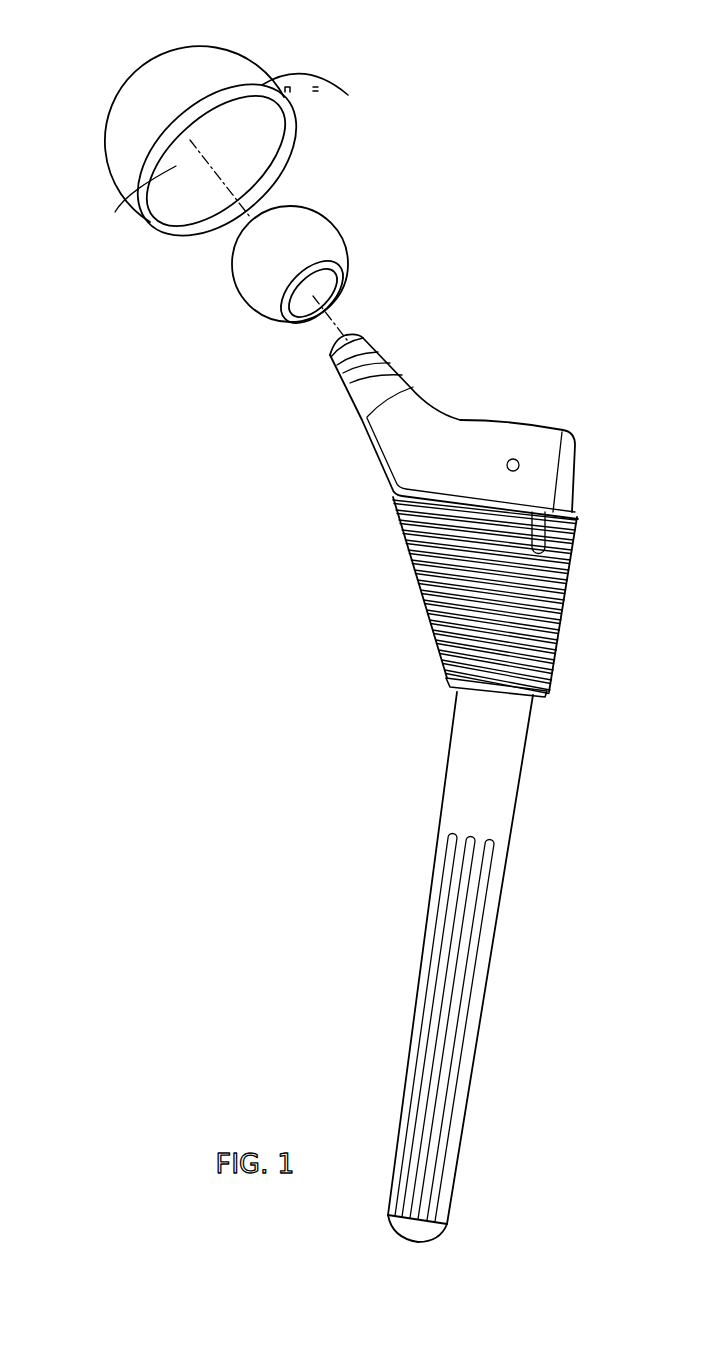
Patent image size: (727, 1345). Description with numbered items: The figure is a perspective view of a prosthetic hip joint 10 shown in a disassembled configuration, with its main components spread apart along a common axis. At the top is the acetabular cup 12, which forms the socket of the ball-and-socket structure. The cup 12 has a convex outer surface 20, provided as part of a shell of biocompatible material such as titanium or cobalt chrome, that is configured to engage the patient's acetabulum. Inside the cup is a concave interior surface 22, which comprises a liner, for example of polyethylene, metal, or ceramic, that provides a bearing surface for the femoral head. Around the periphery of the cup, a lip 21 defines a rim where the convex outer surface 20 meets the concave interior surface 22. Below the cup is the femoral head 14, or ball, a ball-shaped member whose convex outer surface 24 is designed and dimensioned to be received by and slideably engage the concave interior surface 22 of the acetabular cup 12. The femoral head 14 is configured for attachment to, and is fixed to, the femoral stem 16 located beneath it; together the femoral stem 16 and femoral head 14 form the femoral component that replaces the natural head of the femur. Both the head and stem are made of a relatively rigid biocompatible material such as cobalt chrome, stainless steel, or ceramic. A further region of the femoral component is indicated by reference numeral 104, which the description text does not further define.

The prosthetic hip joint 10 is at (489, 140).
The acetabular cup 12 is at (133, 137).
The femoral head 14 is at (235, 293).
The femoral stem 16 is at (443, 806).
The convex outer surface 20 is at (140, 82).
The lip 21 is at (172, 164).
The concave interior surface 22 is at (181, 199).
The convex outer surface 24 is at (338, 216).
The proximal body 104 is at (200, 461).